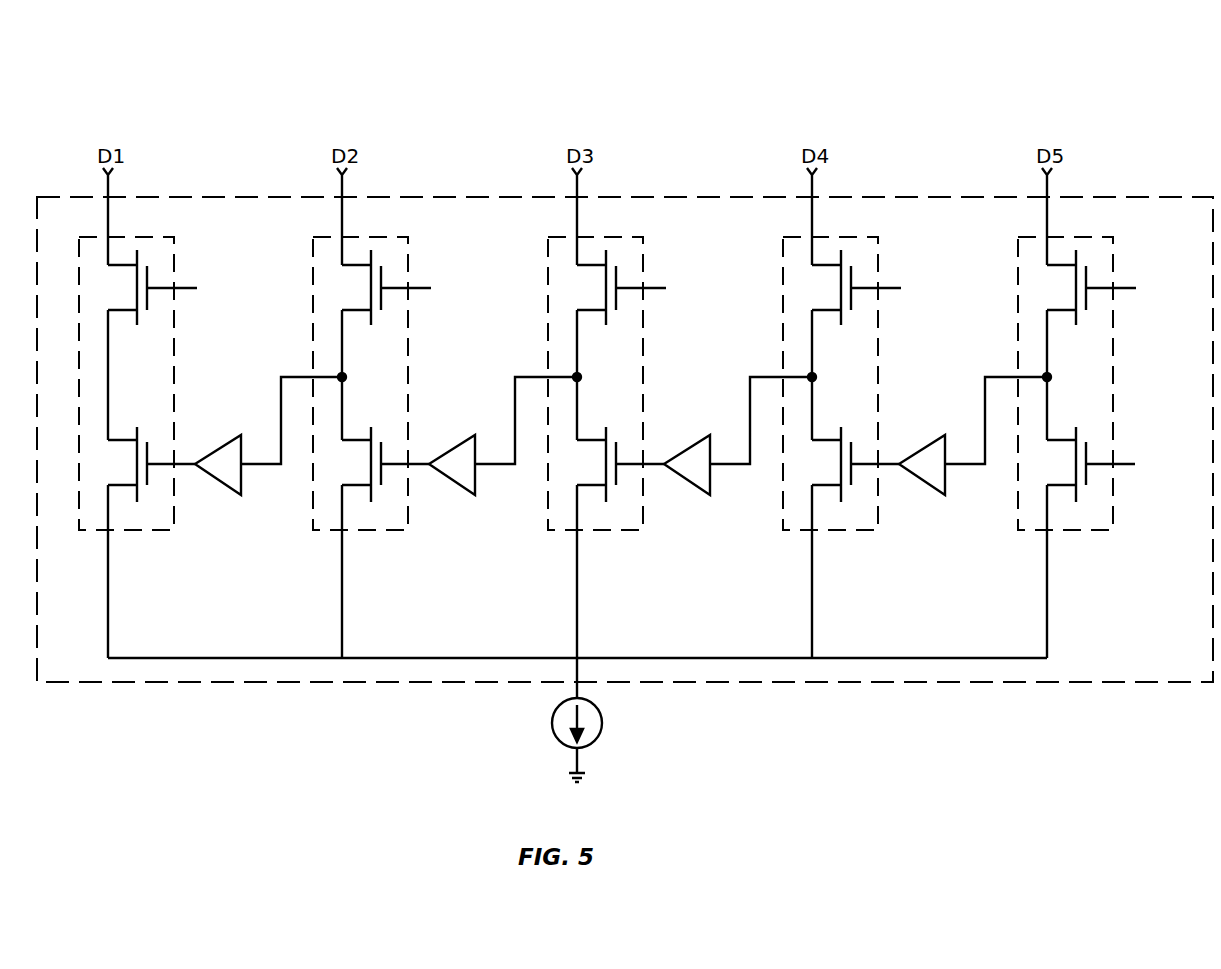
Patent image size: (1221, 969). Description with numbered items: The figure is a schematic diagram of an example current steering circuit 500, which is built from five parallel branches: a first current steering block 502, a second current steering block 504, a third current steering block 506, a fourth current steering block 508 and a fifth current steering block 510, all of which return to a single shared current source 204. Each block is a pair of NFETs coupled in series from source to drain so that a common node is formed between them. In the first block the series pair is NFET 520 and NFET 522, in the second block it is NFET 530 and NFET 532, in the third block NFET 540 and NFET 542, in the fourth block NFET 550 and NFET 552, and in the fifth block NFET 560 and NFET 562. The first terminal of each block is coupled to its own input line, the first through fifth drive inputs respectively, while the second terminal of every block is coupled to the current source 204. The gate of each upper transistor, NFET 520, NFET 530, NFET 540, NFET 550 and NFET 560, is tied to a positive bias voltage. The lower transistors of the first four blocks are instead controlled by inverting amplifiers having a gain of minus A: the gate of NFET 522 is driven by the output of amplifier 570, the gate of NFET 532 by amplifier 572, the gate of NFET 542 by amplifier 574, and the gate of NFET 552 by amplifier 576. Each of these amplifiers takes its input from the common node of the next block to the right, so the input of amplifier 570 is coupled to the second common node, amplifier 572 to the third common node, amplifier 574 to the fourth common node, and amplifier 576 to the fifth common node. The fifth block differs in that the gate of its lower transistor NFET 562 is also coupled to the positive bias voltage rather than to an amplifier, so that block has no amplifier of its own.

The current steering circuit 500 is at (935, 120).
The first current steering block 502 is at (66, 368).
The second current steering block 504 is at (399, 383).
The third current steering block 506 is at (634, 383).
The fourth current steering block 508 is at (869, 383).
The fifth current steering block 510 is at (1104, 383).
The NFET 520 is at (182, 294).
The NFET 530 is at (416, 294).
The NFET 540 is at (651, 294).
The NFET 550 is at (886, 294).
The NFET 560 is at (1121, 294).
The NFET 522 is at (167, 484).
The NFET 532 is at (401, 484).
The NFET 542 is at (636, 484).
The NFET 552 is at (871, 484).
The NFET 562 is at (1106, 484).
The amplifier 570 is at (268, 459).
The amplifier 572 is at (503, 459).
The amplifier 574 is at (738, 459).
The amplifier 576 is at (973, 459).
The current source 204 is at (603, 722).